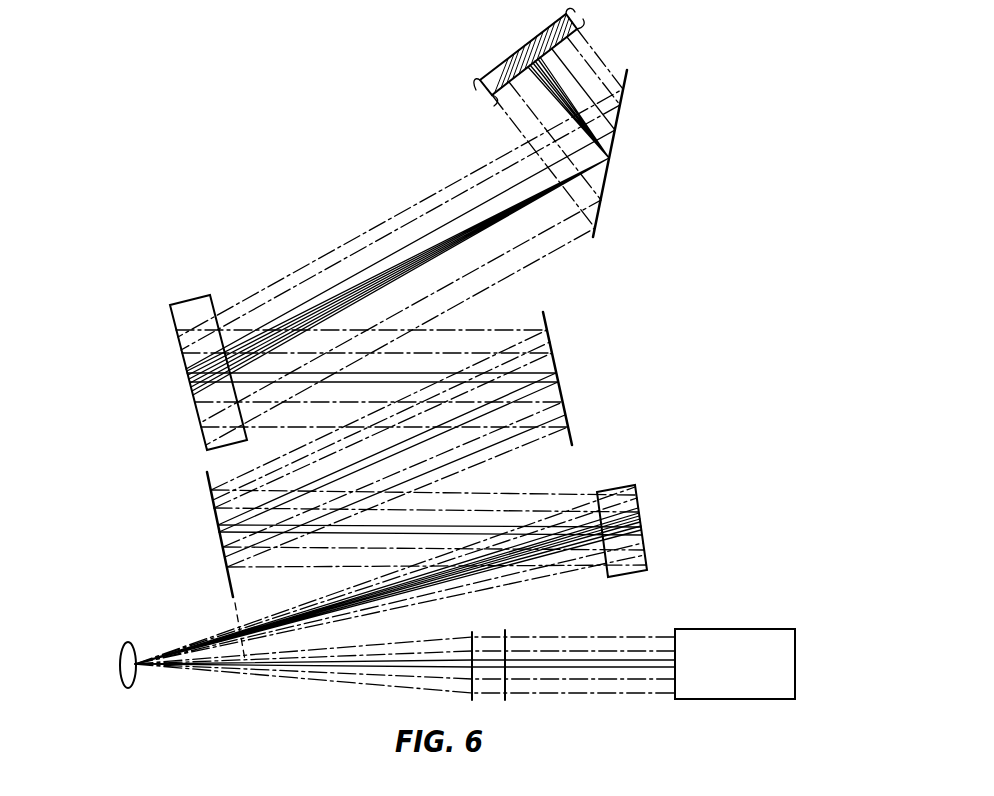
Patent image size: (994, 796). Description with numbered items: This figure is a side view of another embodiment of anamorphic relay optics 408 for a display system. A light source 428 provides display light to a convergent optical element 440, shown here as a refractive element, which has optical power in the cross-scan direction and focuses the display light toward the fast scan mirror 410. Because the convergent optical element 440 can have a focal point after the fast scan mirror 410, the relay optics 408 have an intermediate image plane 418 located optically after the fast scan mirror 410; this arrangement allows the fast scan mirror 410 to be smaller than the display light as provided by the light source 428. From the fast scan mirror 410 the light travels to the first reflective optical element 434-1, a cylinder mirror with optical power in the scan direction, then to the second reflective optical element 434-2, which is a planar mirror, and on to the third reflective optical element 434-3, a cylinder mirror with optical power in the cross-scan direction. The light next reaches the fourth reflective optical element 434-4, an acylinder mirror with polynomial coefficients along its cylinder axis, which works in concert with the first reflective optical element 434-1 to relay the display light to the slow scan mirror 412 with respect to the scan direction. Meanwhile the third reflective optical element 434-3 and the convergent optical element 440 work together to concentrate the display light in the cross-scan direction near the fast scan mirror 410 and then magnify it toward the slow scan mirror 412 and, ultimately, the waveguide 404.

The waveguide 404 is at (485, 86).
The slow scan mirror 412 is at (610, 152).
The anamorphic relay optics 408 is at (258, 258).
The fourth reflective optical element 434-4 is at (190, 384).
The third reflective optical element 434-3 is at (564, 407).
The second reflective optical element 434-2 is at (219, 530).
The first reflective optical element 434-1 is at (638, 505).
The intermediate image plane 418 is at (235, 606).
The fast scan mirror 410 is at (129, 642).
The convergent optical element 440 is at (505, 633).
The light source 428 is at (750, 676).